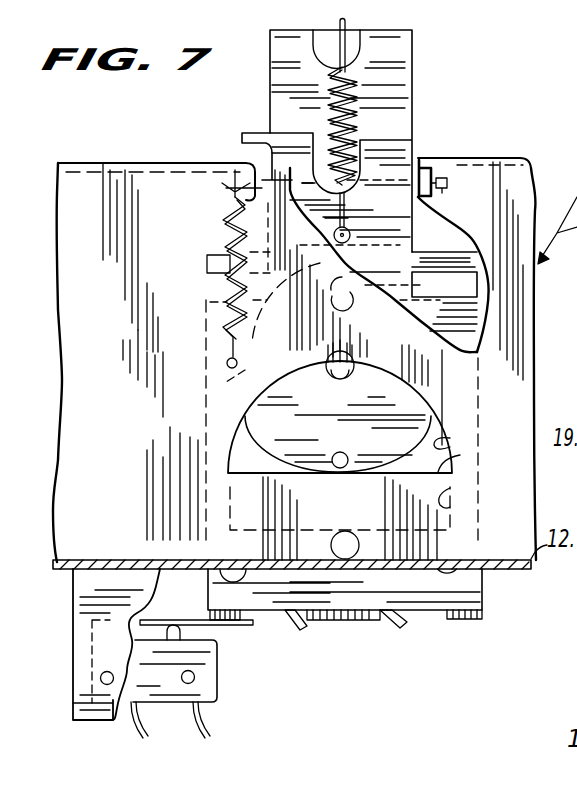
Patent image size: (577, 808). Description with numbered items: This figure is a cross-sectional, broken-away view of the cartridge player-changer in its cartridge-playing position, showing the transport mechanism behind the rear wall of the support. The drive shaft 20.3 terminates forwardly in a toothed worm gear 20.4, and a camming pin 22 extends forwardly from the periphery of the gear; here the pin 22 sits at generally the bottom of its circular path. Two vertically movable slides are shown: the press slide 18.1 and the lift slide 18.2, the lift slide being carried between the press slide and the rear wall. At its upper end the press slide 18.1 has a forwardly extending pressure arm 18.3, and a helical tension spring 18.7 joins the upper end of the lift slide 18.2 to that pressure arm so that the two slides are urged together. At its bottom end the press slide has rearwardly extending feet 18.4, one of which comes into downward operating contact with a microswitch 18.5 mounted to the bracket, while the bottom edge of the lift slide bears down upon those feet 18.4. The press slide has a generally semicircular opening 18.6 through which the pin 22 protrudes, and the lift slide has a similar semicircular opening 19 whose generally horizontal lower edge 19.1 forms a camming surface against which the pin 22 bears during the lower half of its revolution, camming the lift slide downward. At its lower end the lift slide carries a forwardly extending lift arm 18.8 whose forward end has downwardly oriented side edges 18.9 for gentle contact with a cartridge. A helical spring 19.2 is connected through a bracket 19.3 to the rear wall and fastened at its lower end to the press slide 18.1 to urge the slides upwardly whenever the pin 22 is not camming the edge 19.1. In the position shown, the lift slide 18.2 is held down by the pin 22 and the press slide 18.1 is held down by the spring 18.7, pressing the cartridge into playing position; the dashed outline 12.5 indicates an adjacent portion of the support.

The press slide 18.1 is at (398, 70).
The lift slide 18.2 is at (400, 151).
The pressure arm 18.3 is at (353, 32).
The feet 18.4 is at (466, 620).
The microswitch 18.5 is at (207, 686).
The semicircular opening 18.6 is at (453, 498).
The helical tension spring 18.7 is at (333, 116).
The lift arm 18.8 is at (356, 620).
The downwardly oriented side edges 18.9 is at (401, 626).
The semicircular opening 19 is at (450, 438).
The lower edge 19.1 is at (460, 455).
The helical spring 19.2 is at (228, 222).
The bracket 19.3 is at (440, 175).
The pivot arm 12.5 is at (262, 372).
The drive shaft 20.3 is at (355, 376).
The worm gear 20.4 is at (340, 417).
The camming pin 22 is at (349, 458).